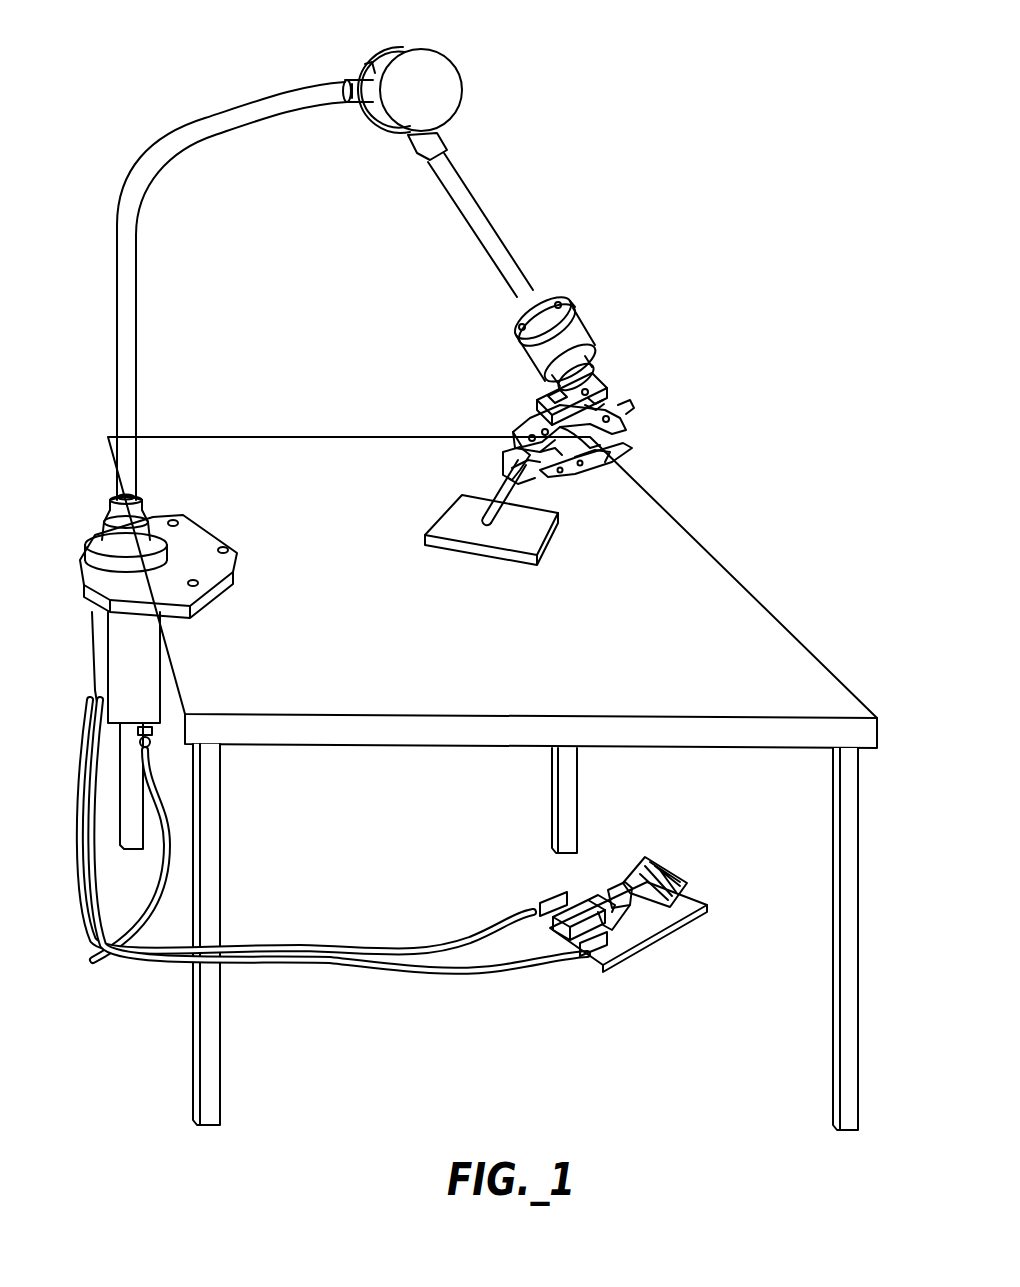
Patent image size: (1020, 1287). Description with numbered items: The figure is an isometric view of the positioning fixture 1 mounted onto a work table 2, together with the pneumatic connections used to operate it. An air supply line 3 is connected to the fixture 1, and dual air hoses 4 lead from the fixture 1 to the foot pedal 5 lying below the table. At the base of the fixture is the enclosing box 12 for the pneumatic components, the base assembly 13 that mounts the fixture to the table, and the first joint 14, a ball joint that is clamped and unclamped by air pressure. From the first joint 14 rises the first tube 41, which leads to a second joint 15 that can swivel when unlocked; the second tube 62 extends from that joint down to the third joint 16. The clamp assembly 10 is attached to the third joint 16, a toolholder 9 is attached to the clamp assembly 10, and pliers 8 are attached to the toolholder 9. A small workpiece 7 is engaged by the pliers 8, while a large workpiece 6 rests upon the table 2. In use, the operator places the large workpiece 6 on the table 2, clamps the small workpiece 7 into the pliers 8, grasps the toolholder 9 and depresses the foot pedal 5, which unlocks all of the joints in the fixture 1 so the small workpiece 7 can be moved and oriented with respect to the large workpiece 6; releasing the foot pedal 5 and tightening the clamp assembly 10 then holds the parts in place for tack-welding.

The positioning fixture 1 is at (553, 157).
The work table 2 is at (741, 580).
The air supply line 3 is at (110, 963).
The dual air hoses 4 is at (500, 930).
The foot pedal 5 is at (672, 865).
The large workpiece 6 is at (495, 553).
The small workpiece 7 is at (490, 497).
The pliers 8 is at (638, 452).
The toolholder 9 is at (635, 423).
The clamp assembly 10 is at (598, 392).
The enclosing box 12 is at (143, 677).
The base plate 13 is at (215, 527).
The first joint 14 is at (142, 498).
The joint 15 is at (463, 78).
The third joint 16 is at (583, 340).
The first tube 41 is at (137, 272).
The second tube 62 is at (510, 250).